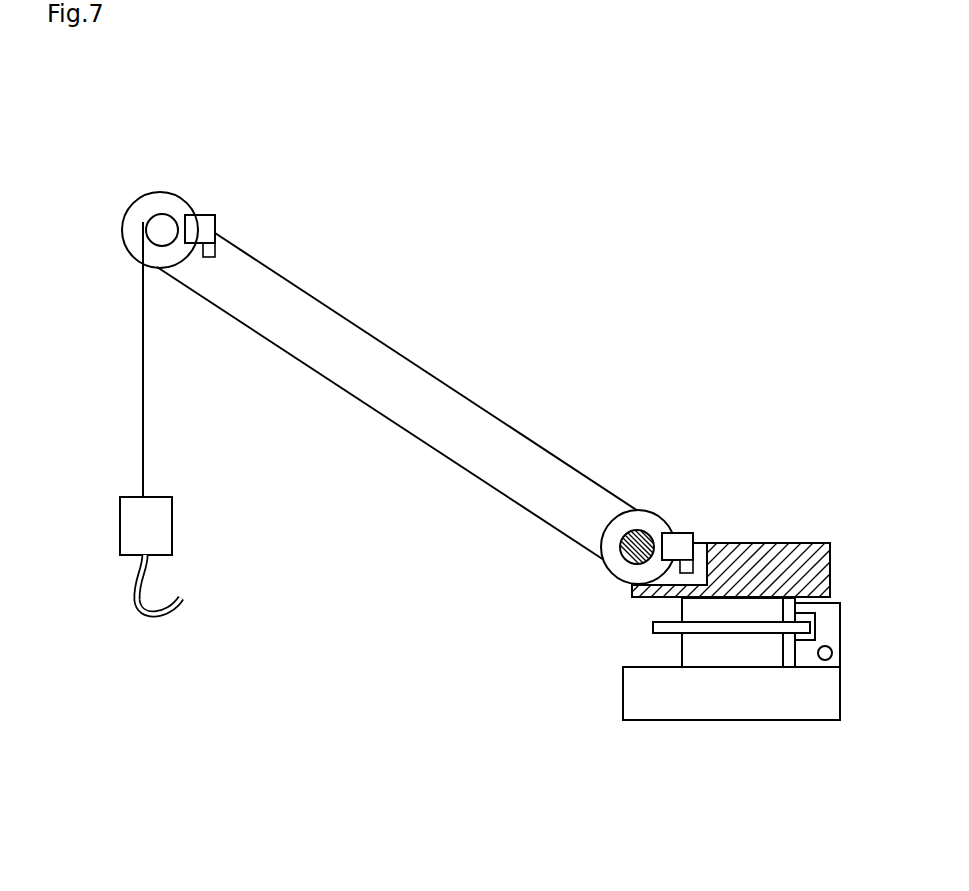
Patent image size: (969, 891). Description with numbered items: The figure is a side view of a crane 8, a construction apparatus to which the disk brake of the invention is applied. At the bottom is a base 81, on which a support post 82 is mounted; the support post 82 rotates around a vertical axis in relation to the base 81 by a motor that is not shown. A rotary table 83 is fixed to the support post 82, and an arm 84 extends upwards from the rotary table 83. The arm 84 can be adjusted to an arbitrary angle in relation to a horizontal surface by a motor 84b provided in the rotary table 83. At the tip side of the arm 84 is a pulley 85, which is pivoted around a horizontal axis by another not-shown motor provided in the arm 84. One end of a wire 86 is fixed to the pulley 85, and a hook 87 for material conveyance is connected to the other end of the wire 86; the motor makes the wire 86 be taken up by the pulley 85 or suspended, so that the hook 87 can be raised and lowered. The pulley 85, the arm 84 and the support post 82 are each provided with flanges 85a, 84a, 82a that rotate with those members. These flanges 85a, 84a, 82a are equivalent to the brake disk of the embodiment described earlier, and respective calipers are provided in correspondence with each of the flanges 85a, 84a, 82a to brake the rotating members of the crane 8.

The crane 8 is at (493, 730).
The base 81 is at (778, 712).
The support post 82 is at (737, 656).
The flange 82a is at (653, 628).
The rotary table 83 is at (831, 569).
The arm 84 is at (527, 437).
The flange 84a is at (642, 511).
The motor 84b is at (624, 559).
The pulley 85 is at (160, 219).
The flange 85a is at (140, 210).
The wire 86 is at (142, 366).
The hook 87 is at (175, 608).